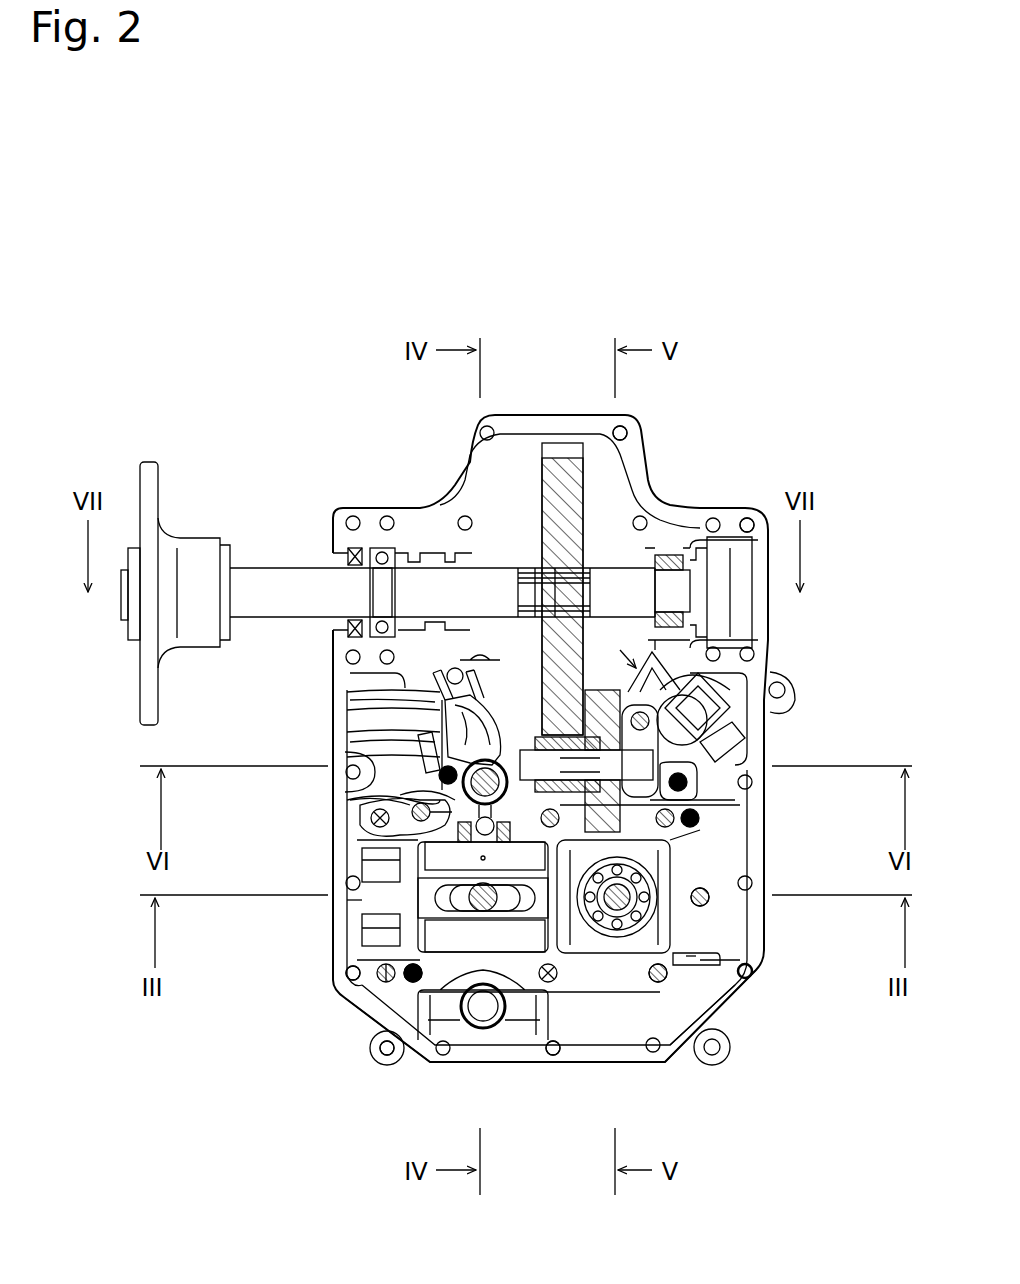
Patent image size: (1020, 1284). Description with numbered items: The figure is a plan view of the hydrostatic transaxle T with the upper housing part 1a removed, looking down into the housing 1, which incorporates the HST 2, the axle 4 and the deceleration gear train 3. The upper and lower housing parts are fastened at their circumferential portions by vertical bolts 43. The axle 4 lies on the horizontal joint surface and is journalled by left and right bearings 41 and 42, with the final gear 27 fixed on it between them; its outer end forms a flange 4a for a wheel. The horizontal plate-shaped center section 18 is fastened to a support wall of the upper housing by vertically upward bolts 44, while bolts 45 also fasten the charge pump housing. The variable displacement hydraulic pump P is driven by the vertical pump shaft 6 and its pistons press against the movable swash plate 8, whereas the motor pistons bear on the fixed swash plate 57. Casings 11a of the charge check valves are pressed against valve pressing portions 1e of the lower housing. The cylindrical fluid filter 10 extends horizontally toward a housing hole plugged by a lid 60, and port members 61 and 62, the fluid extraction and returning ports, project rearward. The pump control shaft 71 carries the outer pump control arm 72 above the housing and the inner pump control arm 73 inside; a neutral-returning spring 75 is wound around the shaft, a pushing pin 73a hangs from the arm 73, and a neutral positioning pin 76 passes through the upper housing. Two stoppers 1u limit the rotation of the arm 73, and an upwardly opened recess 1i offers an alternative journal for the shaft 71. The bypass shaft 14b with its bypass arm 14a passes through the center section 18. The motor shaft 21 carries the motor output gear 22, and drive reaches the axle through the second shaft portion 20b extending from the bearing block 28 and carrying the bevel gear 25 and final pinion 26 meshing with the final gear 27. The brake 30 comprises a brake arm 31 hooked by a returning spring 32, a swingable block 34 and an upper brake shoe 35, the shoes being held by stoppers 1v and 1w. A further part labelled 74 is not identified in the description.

The housing 1 is at (448, 500).
The hydrostatic transaxle T is at (288, 438).
The flange 4a is at (149, 462).
The axle 4 is at (273, 568).
The stoppers 1u is at (521, 570).
The bearing 41 is at (383, 548).
The final gear 27 is at (562, 447).
The final pinion 26 is at (568, 700).
The bevel gear 25 is at (586, 724).
The bearing 42 is at (668, 555).
The deceleration gear train 3 is at (692, 603).
The vertical bolts 43 is at (627, 433).
The stopper 1v is at (760, 640).
The brake 30 is at (722, 690).
The upper brake shoe 35 is at (735, 690).
The brake arm 31 is at (786, 692).
The swingable block 34 is at (830, 686).
The returning spring 32 is at (790, 722).
The stopper 1w is at (785, 742).
The second shaft portion 20b is at (735, 745).
The pivot 74 is at (460, 792).
The inner pump control arm 73 is at (388, 748).
The pushing pin 73a is at (386, 716).
The neutral positioning pin 76 is at (382, 682).
The neutral-returning spring 75 is at (345, 692).
The fluid filter 10 is at (360, 728).
The lid 60 is at (481, 672).
The pump control shaft 71 is at (400, 798).
The outer pump control arm 72 is at (300, 800).
The pump shaft 6 is at (400, 878).
The casings 11a is at (362, 853).
The valve pressing portions 1e is at (360, 862).
The movable swash plate 8 is at (350, 903).
The hydraulic pump P is at (385, 955).
The bolts 45 is at (345, 983).
The upper housing part 1a is at (380, 1030).
The bolts 44 is at (385, 988).
The port member 62 is at (428, 1052).
The recess 1i is at (486, 1030).
The port member 61 is at (556, 1062).
The center section 18 is at (584, 975).
The HST 2 is at (662, 998).
The bypass arm 14a is at (767, 967).
The bypass shaft 14b is at (710, 898).
The motor shaft 21 is at (672, 853).
The motor output gear 22 is at (706, 947).
The fixed swash plate 57 is at (702, 828).
The bearing block 28 is at (730, 802).